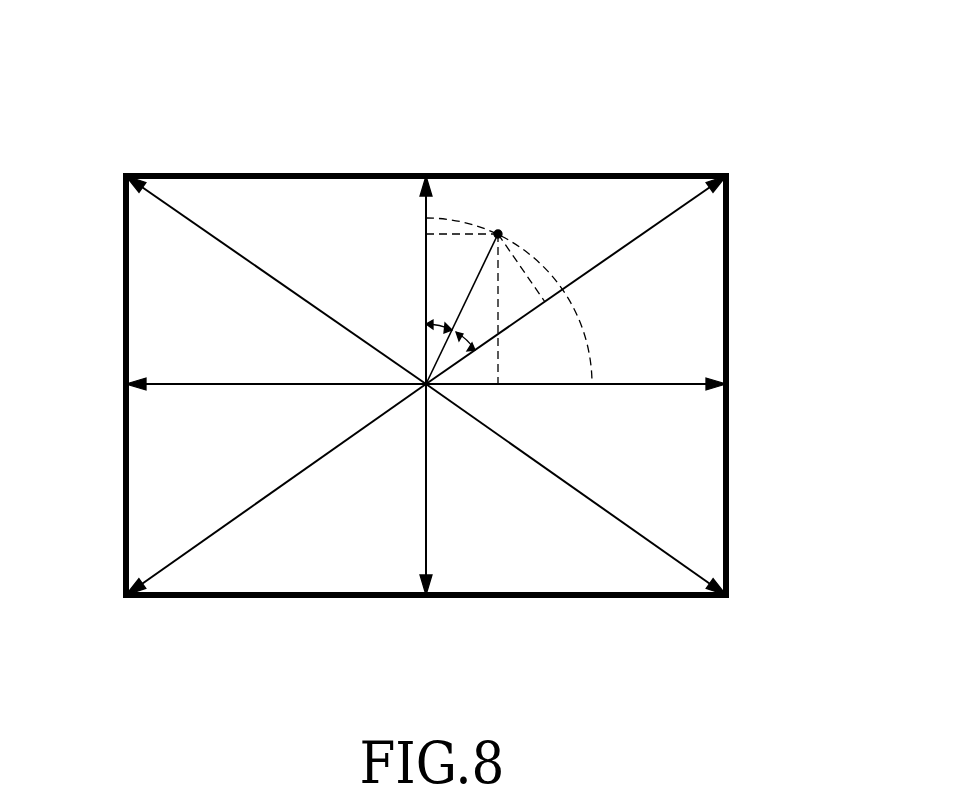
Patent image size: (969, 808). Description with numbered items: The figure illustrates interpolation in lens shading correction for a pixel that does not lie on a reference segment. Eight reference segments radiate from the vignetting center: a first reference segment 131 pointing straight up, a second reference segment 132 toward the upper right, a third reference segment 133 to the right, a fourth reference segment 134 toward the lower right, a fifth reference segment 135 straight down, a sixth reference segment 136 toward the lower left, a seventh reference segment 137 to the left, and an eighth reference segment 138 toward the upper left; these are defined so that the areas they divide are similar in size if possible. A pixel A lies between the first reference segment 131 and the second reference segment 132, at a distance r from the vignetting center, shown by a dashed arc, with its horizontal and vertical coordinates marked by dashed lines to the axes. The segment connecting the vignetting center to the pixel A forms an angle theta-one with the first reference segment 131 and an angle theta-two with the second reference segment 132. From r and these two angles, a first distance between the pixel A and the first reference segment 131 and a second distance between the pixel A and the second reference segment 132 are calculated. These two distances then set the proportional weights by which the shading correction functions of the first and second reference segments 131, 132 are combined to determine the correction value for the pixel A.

The first reference segment 131 is at (425, 213).
The second reference segment 132 is at (656, 225).
The third reference segment 133 is at (670, 384).
The fourth reference segment 134 is at (680, 562).
The fifth reference segment 135 is at (427, 557).
The sixth reference segment 136 is at (185, 555).
The seventh reference segment 137 is at (180, 384).
The eighth reference segment 138 is at (203, 228).
The pixel A is at (498, 234).